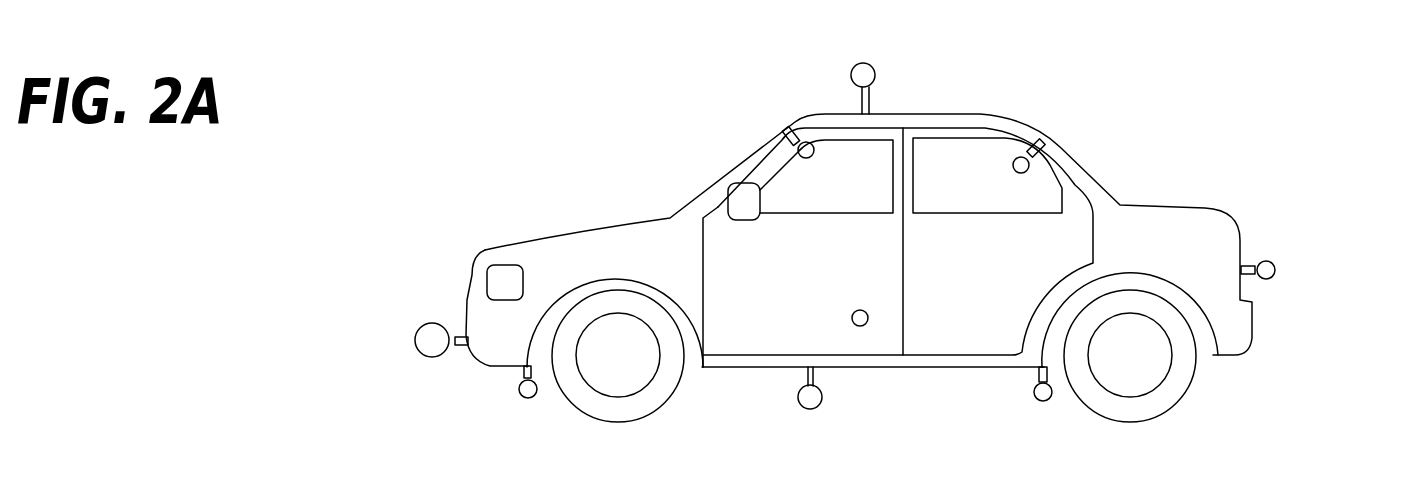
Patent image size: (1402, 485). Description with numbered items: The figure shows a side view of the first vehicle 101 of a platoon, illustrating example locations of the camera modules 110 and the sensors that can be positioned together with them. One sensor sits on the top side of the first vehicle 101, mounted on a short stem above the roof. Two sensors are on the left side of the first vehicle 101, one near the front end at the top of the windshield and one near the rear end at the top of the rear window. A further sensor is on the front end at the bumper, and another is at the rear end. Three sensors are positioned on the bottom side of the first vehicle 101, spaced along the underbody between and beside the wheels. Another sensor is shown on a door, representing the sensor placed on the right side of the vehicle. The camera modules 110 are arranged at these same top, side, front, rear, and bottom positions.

The first vehicle 101 is at (1182, 160).
The camera modules 110 is at (888, 244).